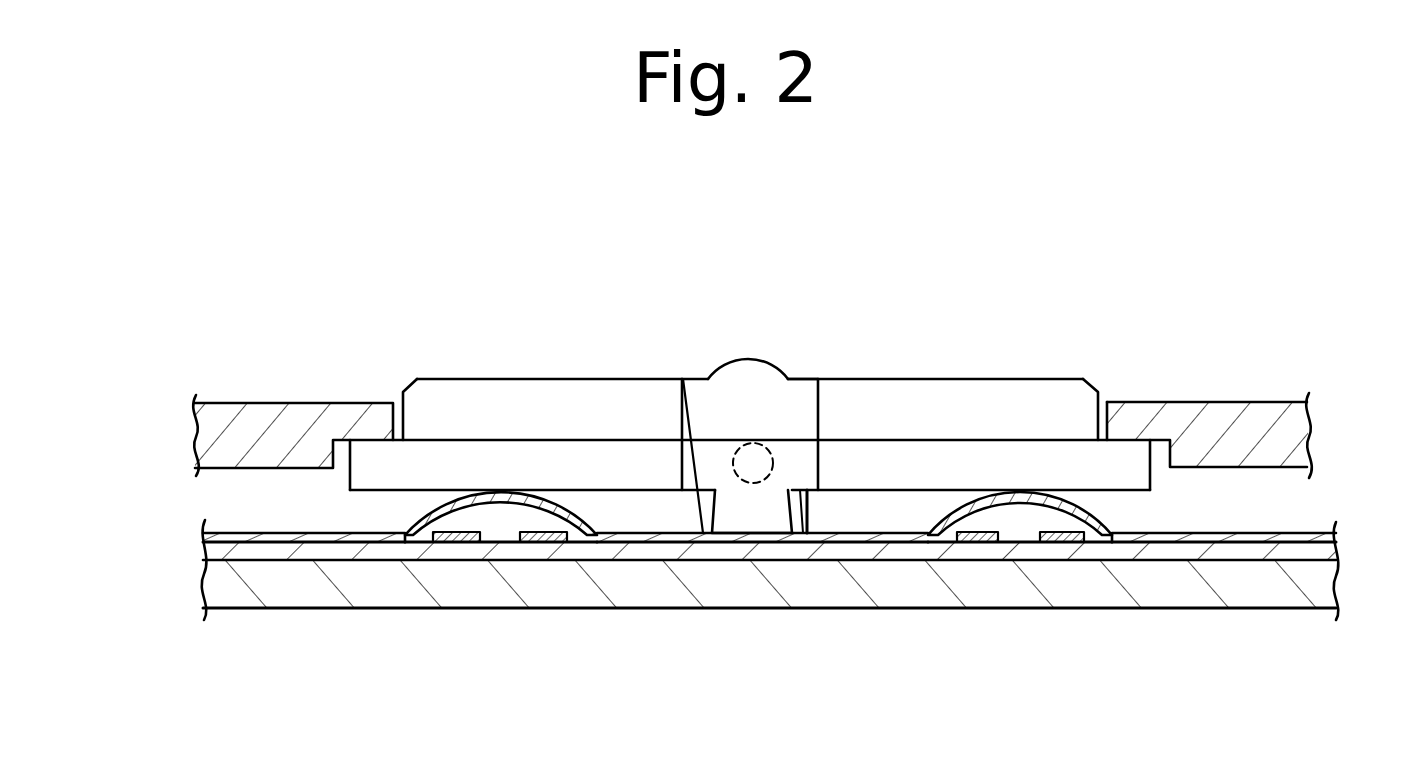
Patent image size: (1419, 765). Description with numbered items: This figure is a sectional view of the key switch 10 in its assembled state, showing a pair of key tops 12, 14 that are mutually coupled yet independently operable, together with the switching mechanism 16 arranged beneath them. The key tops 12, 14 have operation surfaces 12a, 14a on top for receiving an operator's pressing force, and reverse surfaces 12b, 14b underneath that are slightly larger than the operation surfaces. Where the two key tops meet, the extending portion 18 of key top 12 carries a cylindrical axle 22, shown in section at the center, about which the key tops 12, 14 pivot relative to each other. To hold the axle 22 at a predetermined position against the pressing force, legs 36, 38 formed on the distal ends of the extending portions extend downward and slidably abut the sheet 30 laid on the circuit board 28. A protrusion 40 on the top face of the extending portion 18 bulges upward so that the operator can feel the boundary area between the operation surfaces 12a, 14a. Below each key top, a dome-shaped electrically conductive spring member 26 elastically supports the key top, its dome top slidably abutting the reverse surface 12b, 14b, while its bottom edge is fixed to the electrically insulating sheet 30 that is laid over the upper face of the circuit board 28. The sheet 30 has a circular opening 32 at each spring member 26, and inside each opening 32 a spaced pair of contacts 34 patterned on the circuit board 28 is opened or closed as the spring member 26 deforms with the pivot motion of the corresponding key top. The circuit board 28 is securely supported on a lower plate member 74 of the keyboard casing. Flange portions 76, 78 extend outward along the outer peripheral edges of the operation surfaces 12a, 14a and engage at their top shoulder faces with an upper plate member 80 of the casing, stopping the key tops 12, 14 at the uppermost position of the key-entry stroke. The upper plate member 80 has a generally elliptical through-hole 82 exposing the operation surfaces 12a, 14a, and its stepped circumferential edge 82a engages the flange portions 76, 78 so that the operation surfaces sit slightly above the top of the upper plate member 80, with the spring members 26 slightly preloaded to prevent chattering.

The key switch 10 is at (660, 277).
The key top 12 is at (963, 379).
The operation surface 12a is at (880, 379).
The reverse surface 12b is at (900, 493).
The key top 14 is at (490, 378).
The operation surface 14a is at (583, 379).
The reverse surface 14b is at (633, 493).
The switching mechanism 16 is at (247, 530).
The extending portion 18 is at (740, 390).
The axle 22 is at (747, 483).
The spring member 26 is at (425, 522).
The circuit board 28 is at (1295, 549).
The electrically insulating sheet 30 is at (1273, 532).
The opening 32 is at (422, 545).
The contact 34 is at (465, 543).
The leg 36 is at (703, 503).
The leg 38 is at (801, 497).
The protrusion 40 is at (747, 358).
The lower plate member 74 is at (1241, 608).
The flange portion 76 is at (1123, 455).
The flange portion 78 is at (370, 450).
The upper plate member 80 is at (1247, 402).
The through-hole 82 is at (1097, 425).
The stepped circumferential edge 82a is at (338, 452).